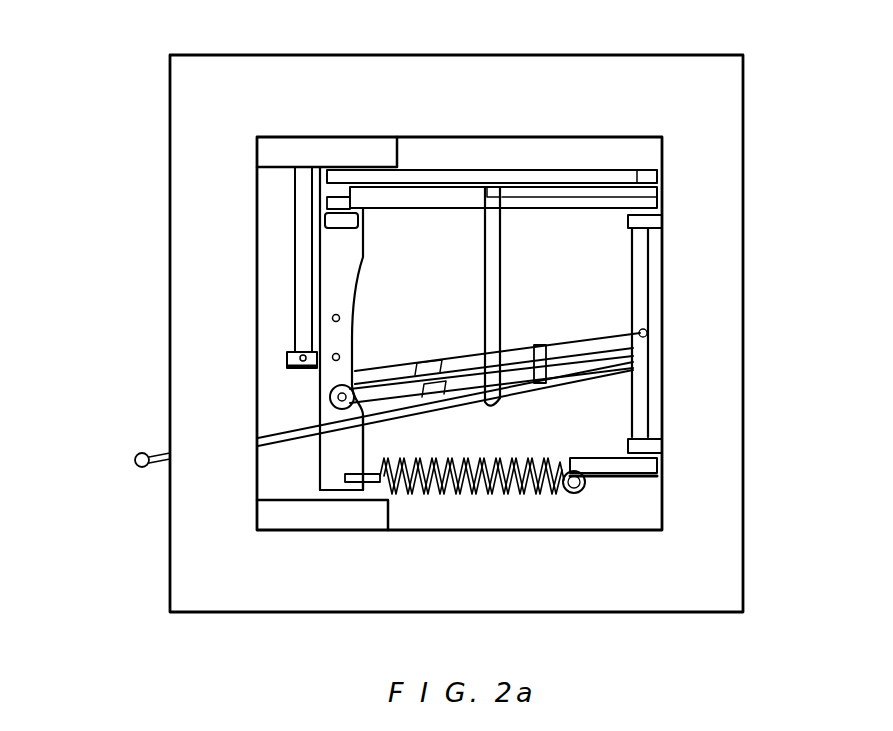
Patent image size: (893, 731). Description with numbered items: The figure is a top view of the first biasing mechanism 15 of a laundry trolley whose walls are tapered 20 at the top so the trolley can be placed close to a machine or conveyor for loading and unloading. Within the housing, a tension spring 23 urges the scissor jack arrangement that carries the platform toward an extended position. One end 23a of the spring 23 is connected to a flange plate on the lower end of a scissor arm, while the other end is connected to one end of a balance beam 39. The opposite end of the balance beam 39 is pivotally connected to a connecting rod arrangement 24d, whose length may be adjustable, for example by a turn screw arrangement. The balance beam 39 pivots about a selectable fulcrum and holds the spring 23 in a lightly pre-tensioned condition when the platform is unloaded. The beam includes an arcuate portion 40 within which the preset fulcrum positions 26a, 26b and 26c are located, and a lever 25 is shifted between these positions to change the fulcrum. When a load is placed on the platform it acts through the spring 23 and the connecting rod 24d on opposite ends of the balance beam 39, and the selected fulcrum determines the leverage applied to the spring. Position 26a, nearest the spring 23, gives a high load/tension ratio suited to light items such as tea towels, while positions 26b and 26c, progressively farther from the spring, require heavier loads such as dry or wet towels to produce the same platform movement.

The first biasing mechanism 15 is at (143, 103).
The tapered wall portion 20 is at (722, 453).
The connecting rod arrangement 24d is at (540, 197).
The arcuate portion 40 is at (355, 330).
The fulcrum position 26c is at (332, 317).
The fulcrum position 26b is at (331, 356).
The fulcrum position 26a is at (333, 396).
The lever 25 is at (133, 470).
The balance beam 39 is at (330, 472).
The tension spring 23 is at (408, 495).
The spring end 23a is at (577, 492).